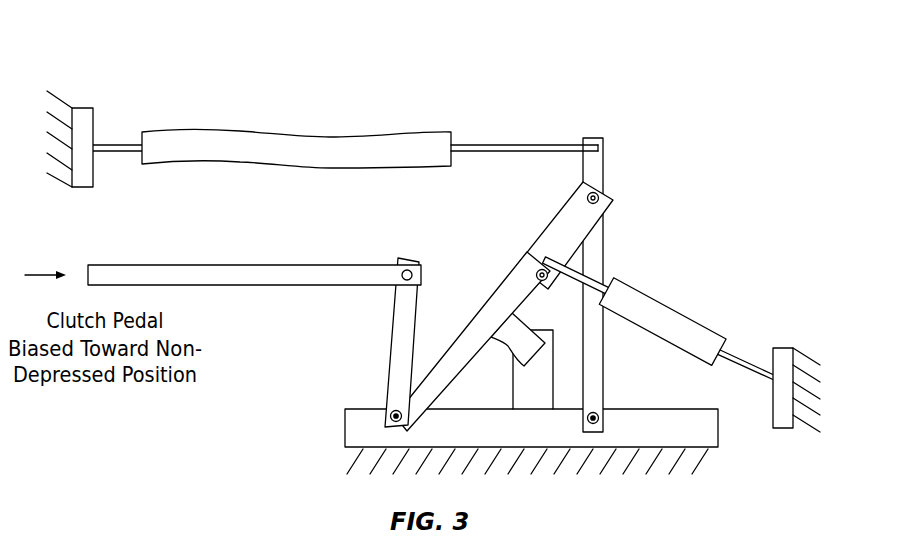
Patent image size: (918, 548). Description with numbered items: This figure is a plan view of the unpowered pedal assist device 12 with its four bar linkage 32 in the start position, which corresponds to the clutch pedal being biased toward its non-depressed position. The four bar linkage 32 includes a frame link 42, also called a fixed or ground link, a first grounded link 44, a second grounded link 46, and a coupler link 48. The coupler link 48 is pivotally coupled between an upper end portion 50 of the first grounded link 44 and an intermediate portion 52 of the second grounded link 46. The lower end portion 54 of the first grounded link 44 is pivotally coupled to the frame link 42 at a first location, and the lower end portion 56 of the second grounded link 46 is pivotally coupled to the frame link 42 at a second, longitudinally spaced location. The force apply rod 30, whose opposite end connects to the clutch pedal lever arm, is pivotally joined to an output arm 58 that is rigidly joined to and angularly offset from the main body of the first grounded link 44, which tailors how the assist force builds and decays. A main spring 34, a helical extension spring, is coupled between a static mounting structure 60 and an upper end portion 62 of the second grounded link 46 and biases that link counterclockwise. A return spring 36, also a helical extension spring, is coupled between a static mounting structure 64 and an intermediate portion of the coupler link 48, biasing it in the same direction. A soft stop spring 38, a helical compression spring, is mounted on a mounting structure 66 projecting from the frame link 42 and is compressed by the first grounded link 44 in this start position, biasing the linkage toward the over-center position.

The unpowered pedal assist device 12 is at (109, 44).
The force apply rod 30 is at (187, 271).
The four bar linkage 32 is at (615, 182).
The main spring 34 is at (233, 139).
The return spring 36 is at (638, 298).
The soft stop spring 38 is at (512, 328).
The frame link 42 is at (546, 440).
The first grounded link 44 is at (468, 320).
The second grounded link 46 is at (613, 347).
The coupler link 48 is at (578, 216).
The upper end portion 50 is at (528, 287).
The intermediate portion 52 is at (598, 238).
The lower end portion 54 is at (412, 396).
The lower end portion 56 is at (600, 417).
The output arm 58 is at (397, 346).
The static mounting structure 60 is at (90, 177).
The upper end portion 62 is at (592, 139).
The static mounting structure 64 is at (785, 350).
The mounting structure 66 is at (518, 393).